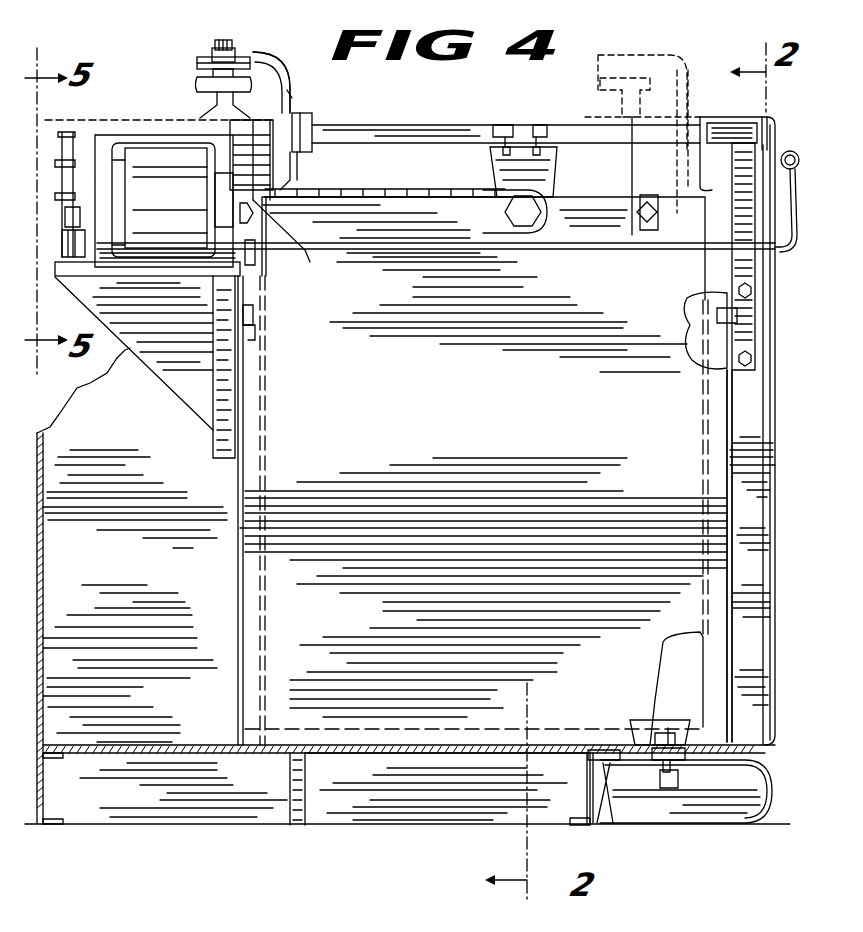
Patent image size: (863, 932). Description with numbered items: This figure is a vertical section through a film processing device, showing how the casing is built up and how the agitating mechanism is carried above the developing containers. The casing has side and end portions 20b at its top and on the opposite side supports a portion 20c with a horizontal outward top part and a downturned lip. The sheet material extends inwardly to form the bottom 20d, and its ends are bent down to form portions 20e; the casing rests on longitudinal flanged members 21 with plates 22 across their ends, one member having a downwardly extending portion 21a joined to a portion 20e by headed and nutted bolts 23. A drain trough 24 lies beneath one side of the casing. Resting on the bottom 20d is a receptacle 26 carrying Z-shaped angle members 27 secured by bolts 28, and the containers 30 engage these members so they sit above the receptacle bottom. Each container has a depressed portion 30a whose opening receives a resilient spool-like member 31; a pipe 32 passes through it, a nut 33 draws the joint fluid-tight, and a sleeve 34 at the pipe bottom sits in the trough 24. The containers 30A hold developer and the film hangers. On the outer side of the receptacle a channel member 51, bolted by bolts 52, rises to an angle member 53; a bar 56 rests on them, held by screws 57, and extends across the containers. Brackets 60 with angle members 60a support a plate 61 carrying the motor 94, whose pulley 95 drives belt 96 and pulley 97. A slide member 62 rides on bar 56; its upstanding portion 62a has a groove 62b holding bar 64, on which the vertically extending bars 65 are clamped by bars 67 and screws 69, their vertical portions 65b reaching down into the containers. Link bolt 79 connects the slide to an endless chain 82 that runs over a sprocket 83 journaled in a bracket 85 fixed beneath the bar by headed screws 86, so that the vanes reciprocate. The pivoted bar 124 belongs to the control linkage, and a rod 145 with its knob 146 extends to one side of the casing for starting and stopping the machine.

The screws 69 is at (216, 42).
The bars 67 is at (212, 52).
The bar 64 is at (197, 62).
The upstanding portion 62a is at (197, 86).
The groove 62b is at (248, 117).
The portion 20c is at (287, 83).
The vertically extending bars 65 is at (292, 90).
The slide member 62 is at (232, 128).
The bar 56 is at (447, 105).
The headed screws 86 is at (520, 125).
The side and end portions 20b is at (705, 185).
The screws 57 is at (760, 120).
The angle member 53 is at (792, 150).
The knob 146 is at (797, 240).
The pulley 97 is at (62, 132).
The belt 96 is at (73, 140).
The pulley 95 is at (62, 190).
The motor 94 is at (180, 199).
The vertical portions 65b is at (292, 182).
The endless chain 82 is at (390, 189).
The bracket 85 is at (490, 165).
The containers 30A is at (588, 205).
The sprocket 83 is at (528, 233).
The bar 124 is at (256, 255).
The headed and nutted bolt 79 is at (280, 245).
The rod 145 is at (660, 250).
The channel member 51 is at (757, 290).
The headed and nutted bolts 52 is at (748, 298).
The headed and nutted bolts 28 is at (260, 318).
The Z-shaped angle members 27 is at (258, 335).
The plate 61 is at (97, 272).
The brackets 60 is at (170, 375).
The angle members 60a is at (223, 443).
The containers 30 is at (695, 633).
The receptacle 26 is at (732, 672).
The depressed portion 30a is at (640, 730).
The pipe 32 is at (662, 732).
The spool-like member 31 is at (675, 728).
The nut 33 is at (687, 755).
The sleeve 34 is at (678, 778).
The bottom 20d is at (200, 745).
The flanged members 21 is at (43, 785).
The plates 22 is at (355, 778).
The downwardly extending portion 21a is at (600, 823).
The portions 20e is at (610, 790).
The headed and nutted bolts 23 is at (618, 770).
The drain trough 24 is at (730, 823).